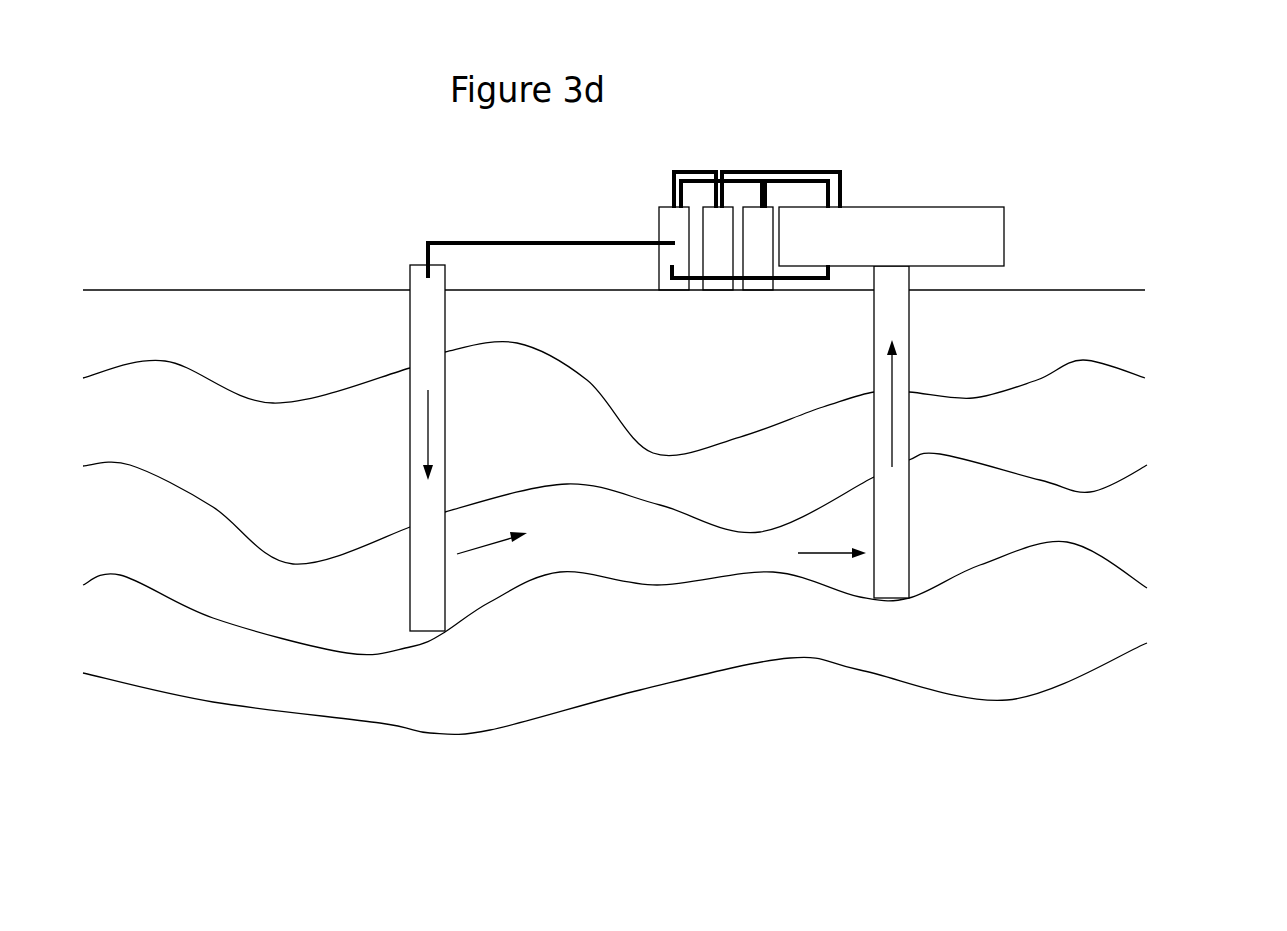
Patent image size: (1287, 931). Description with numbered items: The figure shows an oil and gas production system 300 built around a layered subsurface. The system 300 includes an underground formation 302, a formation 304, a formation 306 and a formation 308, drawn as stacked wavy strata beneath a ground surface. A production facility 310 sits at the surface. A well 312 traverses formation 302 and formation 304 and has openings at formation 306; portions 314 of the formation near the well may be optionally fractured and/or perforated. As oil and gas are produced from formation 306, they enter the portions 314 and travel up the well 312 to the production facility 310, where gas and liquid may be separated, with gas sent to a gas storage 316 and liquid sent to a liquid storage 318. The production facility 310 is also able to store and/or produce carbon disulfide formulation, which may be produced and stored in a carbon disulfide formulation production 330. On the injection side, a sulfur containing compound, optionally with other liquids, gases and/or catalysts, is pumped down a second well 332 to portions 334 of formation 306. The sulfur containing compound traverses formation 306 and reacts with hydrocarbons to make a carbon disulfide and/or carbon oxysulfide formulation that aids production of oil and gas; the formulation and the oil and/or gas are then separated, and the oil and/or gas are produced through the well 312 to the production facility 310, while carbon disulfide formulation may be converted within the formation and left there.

The system 300 is at (422, 149).
The underground formation 302 is at (614, 373).
The formation 304 is at (615, 487).
The formation 306 is at (615, 573).
The formation 308 is at (615, 659).
The production facility 310 is at (915, 249).
The well 312 is at (909, 317).
The portions of formation 314 is at (847, 570).
The gas storage 316 is at (755, 230).
The liquid storage 318 is at (722, 230).
The carbon disulfide formulation production 330 is at (673, 222).
The well 332 is at (428, 330).
The portions of formation 334 is at (466, 583).